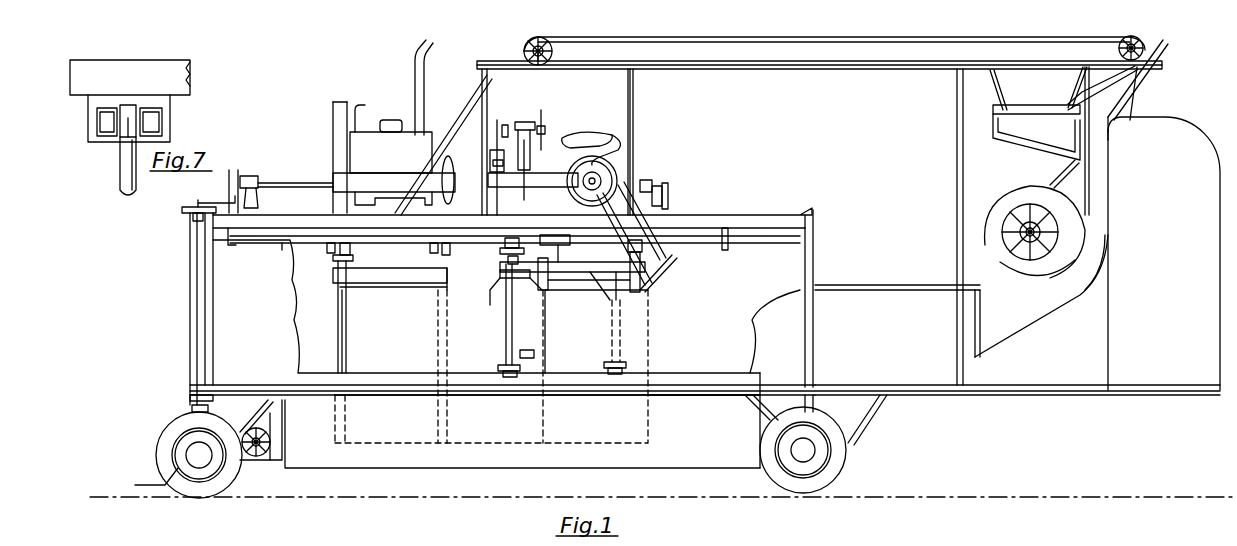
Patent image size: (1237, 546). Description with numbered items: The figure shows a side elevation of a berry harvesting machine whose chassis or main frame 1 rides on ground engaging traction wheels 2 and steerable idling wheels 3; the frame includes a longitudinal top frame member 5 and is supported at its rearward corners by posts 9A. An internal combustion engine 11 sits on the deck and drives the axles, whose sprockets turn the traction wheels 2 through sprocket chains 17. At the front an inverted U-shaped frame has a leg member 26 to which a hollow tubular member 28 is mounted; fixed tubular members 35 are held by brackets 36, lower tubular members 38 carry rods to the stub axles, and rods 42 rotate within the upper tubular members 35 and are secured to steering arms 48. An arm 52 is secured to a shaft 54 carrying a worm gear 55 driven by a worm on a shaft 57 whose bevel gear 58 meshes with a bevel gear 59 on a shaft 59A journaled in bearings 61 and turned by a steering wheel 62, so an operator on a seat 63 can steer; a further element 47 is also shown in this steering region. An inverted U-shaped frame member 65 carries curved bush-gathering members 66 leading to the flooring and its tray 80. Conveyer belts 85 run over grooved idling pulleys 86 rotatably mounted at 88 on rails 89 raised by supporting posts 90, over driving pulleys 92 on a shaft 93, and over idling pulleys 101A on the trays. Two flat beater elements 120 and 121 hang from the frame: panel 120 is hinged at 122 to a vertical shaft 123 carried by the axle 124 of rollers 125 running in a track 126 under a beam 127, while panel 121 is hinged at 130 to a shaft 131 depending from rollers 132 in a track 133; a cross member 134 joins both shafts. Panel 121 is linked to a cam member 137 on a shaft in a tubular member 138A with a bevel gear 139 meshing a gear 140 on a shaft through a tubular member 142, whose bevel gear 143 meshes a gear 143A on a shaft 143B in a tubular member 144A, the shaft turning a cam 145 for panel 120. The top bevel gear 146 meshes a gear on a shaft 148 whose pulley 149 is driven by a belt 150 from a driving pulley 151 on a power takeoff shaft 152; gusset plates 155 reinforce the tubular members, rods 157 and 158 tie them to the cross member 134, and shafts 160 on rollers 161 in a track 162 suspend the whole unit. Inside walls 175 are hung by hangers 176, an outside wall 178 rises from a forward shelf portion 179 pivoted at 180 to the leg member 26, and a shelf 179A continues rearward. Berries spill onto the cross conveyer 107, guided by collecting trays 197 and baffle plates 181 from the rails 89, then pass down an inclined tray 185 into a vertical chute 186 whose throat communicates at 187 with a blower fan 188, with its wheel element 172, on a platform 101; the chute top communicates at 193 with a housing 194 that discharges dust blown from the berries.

In FIG. 1, the main frame 1 is at (774, 210).
In FIG. 1, the traction wheels 2 is at (845, 465).
In FIG. 1, the steerable idling wheels 3 is at (232, 478).
In FIG. 1, the longitudinal top frame member 5 is at (732, 215).
In FIG. 1, the posts 9A is at (814, 245).
In FIG. 1, the internal combustion engine 11 is at (383, 158).
In FIG. 1, the sprocket chains 17 is at (762, 419).
In FIG. 1, the leg member 26 is at (205, 304).
In FIG. 1, the hollow tubular member 28 is at (191, 266).
In FIG. 1, the tubular members 35 is at (192, 224).
In FIG. 1, the brackets 36 is at (183, 210).
In FIG. 1, the tubular members 38 is at (190, 408).
In FIG. 1, the rods 42 is at (198, 202).
In FIG. 1, the shaft housing 47 is at (518, 207).
In FIG. 1, the steering arms 48 is at (228, 196).
In FIG. 1, the arm 52 is at (240, 190).
In FIG. 1, the shaft 54 is at (287, 182).
In FIG. 1, the worm gear 55 is at (503, 196).
In FIG. 1, the shaft 57 is at (490, 156).
In FIG. 1, the bevel gear 58 is at (497, 122).
In FIG. 1, the bevel gear 59 is at (506, 125).
In FIG. 1, the shaft 59A is at (527, 122).
In FIG. 1, the bearings 61 is at (530, 138).
In FIG. 1, the steering wheel 62 is at (543, 120).
In FIG. 1, the seat 63 is at (584, 136).
In FIG. 1, the inverted U-shaped frame member 65 is at (231, 245).
In FIG. 1, the bush-gathering members 66 is at (158, 478).
In FIG. 1, the tray 80 is at (279, 466).
In FIG. 1, the conveyer belts 85 is at (790, 37).
In FIG. 1, the grooved idling pulleys 86 is at (553, 51).
In FIG. 1, the pulley mounting 88 is at (538, 64).
In FIG. 1, the rails 89 is at (782, 69).
In FIG. 1, the supporting posts 90 is at (634, 115).
In FIG. 1, the driving pulleys 92 is at (1120, 38).
In FIG. 1, the shaft 93 is at (1118, 50).
In FIG. 1, the platform 101 is at (858, 285).
In FIG. 1, the idling pulleys 101A is at (248, 424).
In FIG. 1, the cross conveyer 107 is at (1037, 112).
In FIG. 1, the beater element 120 is at (389, 340).
In FIG. 1, the beater element 121 is at (567, 347).
In FIG. 1, the hinge 122 is at (337, 340).
In FIG. 7, the vertical shaft 123 is at (121, 176).
In FIG. 1, the vertical shaft 123 is at (337, 293).
In FIG. 7, the axle 124 is at (130, 124).
In FIG. 7, the rollers 125 is at (160, 120).
In FIG. 1, the rollers 125 is at (340, 256).
In FIG. 7, the track 126 is at (88, 120).
In FIG. 1, the track 126 is at (353, 258).
In FIG. 7, the beam 127 is at (180, 76).
In FIG. 1, the beam 127 is at (327, 247).
In FIG. 1, the hinge 130 is at (440, 338).
In FIG. 1, the shaft 131 is at (445, 288).
In FIG. 1, the rollers 132 is at (430, 249).
In FIG. 1, the track 133 is at (442, 255).
In FIG. 1, the cross member 134 is at (385, 278).
In FIG. 1, the cam member 137 is at (603, 364).
In FIG. 1, the tubular member 138A is at (610, 338).
In FIG. 1, the bevel gear 139 is at (641, 272).
In FIG. 1, the bevel gear 140 is at (612, 270).
In FIG. 1, the tubular member 142 is at (566, 272).
In FIG. 1, the bevel gear 143 is at (500, 274).
In FIG. 1, the bevel gear 143A is at (508, 290).
In FIG. 1, the shaft 143B is at (508, 262).
In FIG. 1, the tubular member 144A is at (508, 326).
In FIG. 1, the cam 145 is at (500, 360).
In FIG. 1, the bevel gear 146 is at (505, 254).
In FIG. 1, the shaft 148 is at (572, 263).
In FIG. 1, the pulley 149 is at (665, 268).
In FIG. 1, the belt 150 is at (666, 200).
In FIG. 1, the driving pulley 151 is at (661, 193).
In FIG. 1, the power takeoff shaft 152 is at (641, 190).
In FIG. 1, the gusset plates 155 is at (540, 292).
In FIG. 1, the rod 157 is at (405, 285).
In FIG. 1, the rod 158 is at (616, 300).
In FIG. 1, the shafts 160 is at (624, 254).
In FIG. 1, the rollers 161 is at (548, 232).
In FIG. 1, the track 162 is at (560, 240).
In FIG. 1, the fan 172 is at (1010, 214).
In FIG. 1, the inside walls 175 is at (300, 317).
In FIG. 1, the hangers 176 is at (283, 246).
In FIG. 1, the outside wall 178 is at (238, 310).
In FIG. 1, the forward shelf portion 179 is at (704, 385).
In FIG. 1, the shelf 179A is at (1012, 386).
In FIG. 1, the pivot connection 180 is at (213, 386).
In FIG. 1, the baffle plates 181 is at (991, 72).
In FIG. 1, the inclined tray 185 is at (1030, 148).
In FIG. 1, the vertical chute 186 is at (1109, 192).
In FIG. 1, the throat communication 187 is at (1058, 178).
In FIG. 1, the blower fan 188 is at (1020, 190).
In FIG. 1, the top communication 193 is at (1104, 136).
In FIG. 1, the housing 194 is at (1186, 303).
In FIG. 1, the collecting trays 197 is at (1103, 82).